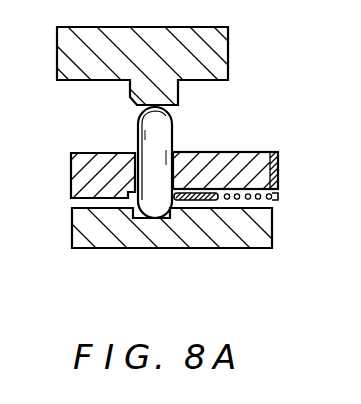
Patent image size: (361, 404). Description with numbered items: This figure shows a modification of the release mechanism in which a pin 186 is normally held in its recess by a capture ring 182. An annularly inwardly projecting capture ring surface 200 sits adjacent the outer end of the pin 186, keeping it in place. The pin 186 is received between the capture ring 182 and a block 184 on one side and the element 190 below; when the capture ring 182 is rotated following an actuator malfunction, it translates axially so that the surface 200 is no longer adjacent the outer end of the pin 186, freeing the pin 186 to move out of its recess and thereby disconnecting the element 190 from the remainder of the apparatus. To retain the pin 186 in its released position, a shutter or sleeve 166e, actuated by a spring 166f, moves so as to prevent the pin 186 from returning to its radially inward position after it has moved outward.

The capture ring 182 is at (228, 53).
The capture ring surface 200 is at (168, 103).
The pin 186 is at (156, 137).
The lower left die block 184 is at (86, 182).
The shutter or sleeve 166e is at (208, 200).
The spring 166f is at (260, 199).
The element disconnected from the apparatus 190 is at (260, 232).